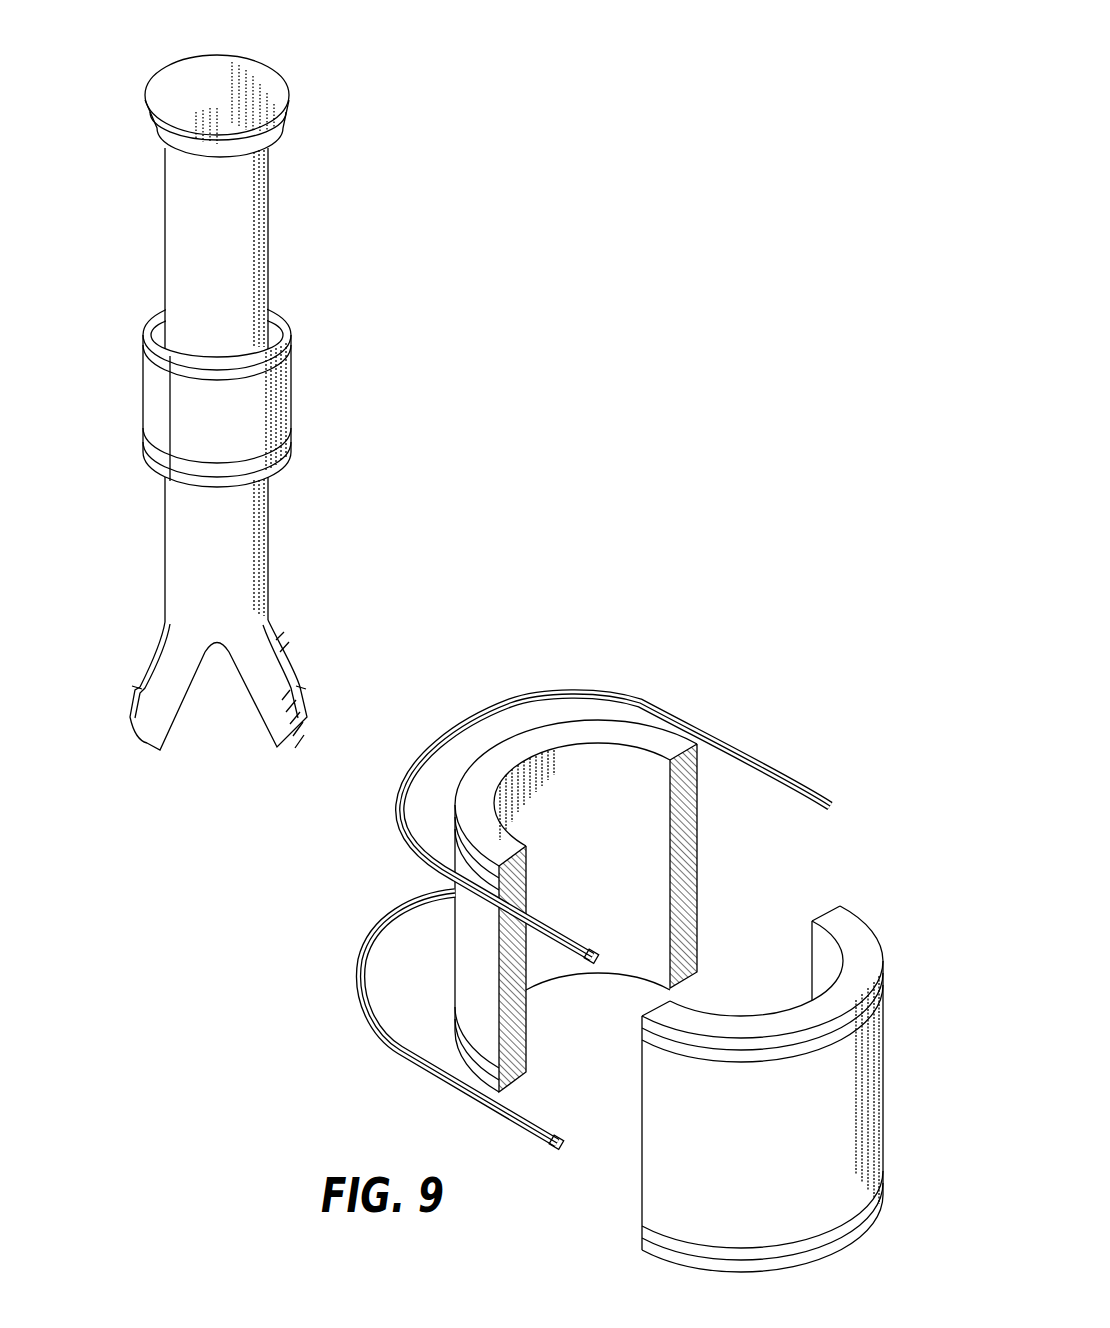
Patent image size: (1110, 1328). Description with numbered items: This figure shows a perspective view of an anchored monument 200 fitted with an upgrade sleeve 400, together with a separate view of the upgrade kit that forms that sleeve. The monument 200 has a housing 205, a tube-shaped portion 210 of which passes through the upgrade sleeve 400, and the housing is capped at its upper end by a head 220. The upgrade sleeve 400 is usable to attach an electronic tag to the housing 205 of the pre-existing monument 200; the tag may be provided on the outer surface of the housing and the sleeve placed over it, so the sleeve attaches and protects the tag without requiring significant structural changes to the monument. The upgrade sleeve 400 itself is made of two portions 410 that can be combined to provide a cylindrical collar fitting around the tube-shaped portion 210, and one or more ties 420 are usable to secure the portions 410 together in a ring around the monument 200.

In FIG. 8, the monument 200 is at (123, 129).
In FIG. 8, the housing 205 is at (119, 240).
In FIG. 8, the tube-shaped portion 210 is at (235, 240).
In FIG. 8, the head 220 is at (225, 64).
In FIG. 8, the upgrade sleeve 400 is at (248, 411).
In FIG. 9, the upgrade sleeve 400 is at (650, 656).
In FIG. 9, the portions 410 is at (680, 862).
In FIG. 9, the ties 420 is at (440, 850).